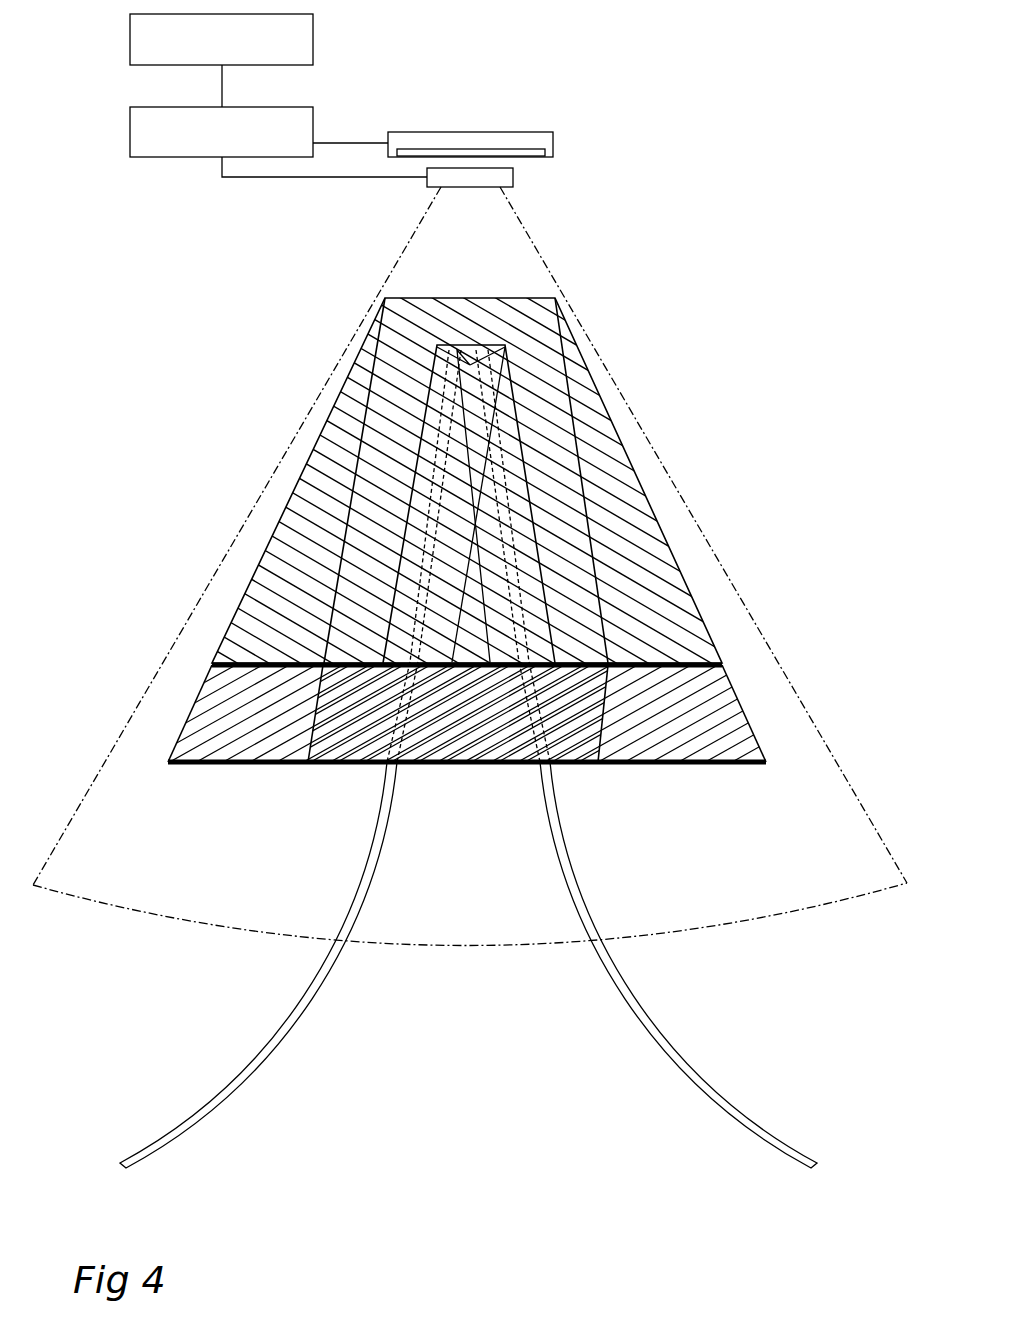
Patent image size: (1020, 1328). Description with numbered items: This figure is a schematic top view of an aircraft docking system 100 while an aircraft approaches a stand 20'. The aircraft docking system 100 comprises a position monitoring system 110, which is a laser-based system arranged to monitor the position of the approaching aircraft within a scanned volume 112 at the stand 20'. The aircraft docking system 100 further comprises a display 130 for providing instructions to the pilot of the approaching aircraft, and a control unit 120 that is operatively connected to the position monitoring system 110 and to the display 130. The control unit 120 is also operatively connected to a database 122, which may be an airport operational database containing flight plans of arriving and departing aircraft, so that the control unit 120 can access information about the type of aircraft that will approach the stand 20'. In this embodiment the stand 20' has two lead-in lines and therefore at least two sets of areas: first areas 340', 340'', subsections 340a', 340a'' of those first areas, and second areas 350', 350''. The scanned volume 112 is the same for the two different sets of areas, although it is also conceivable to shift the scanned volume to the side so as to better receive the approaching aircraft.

The aircraft docking system 100 is at (508, 59).
The position monitoring system 110 is at (489, 176).
The volume 112 is at (767, 920).
The control unit 120 is at (278, 142).
The database 122 is at (221, 60).
The display 130 is at (553, 143).
The stand 20' is at (834, 238).
The first area 340' is at (447, 532).
The first area 340'' is at (475, 532).
The subsection 340a' is at (305, 756).
The subsection 340a'' is at (634, 756).
The second area 350' is at (406, 698).
The second area 350'' is at (508, 696).